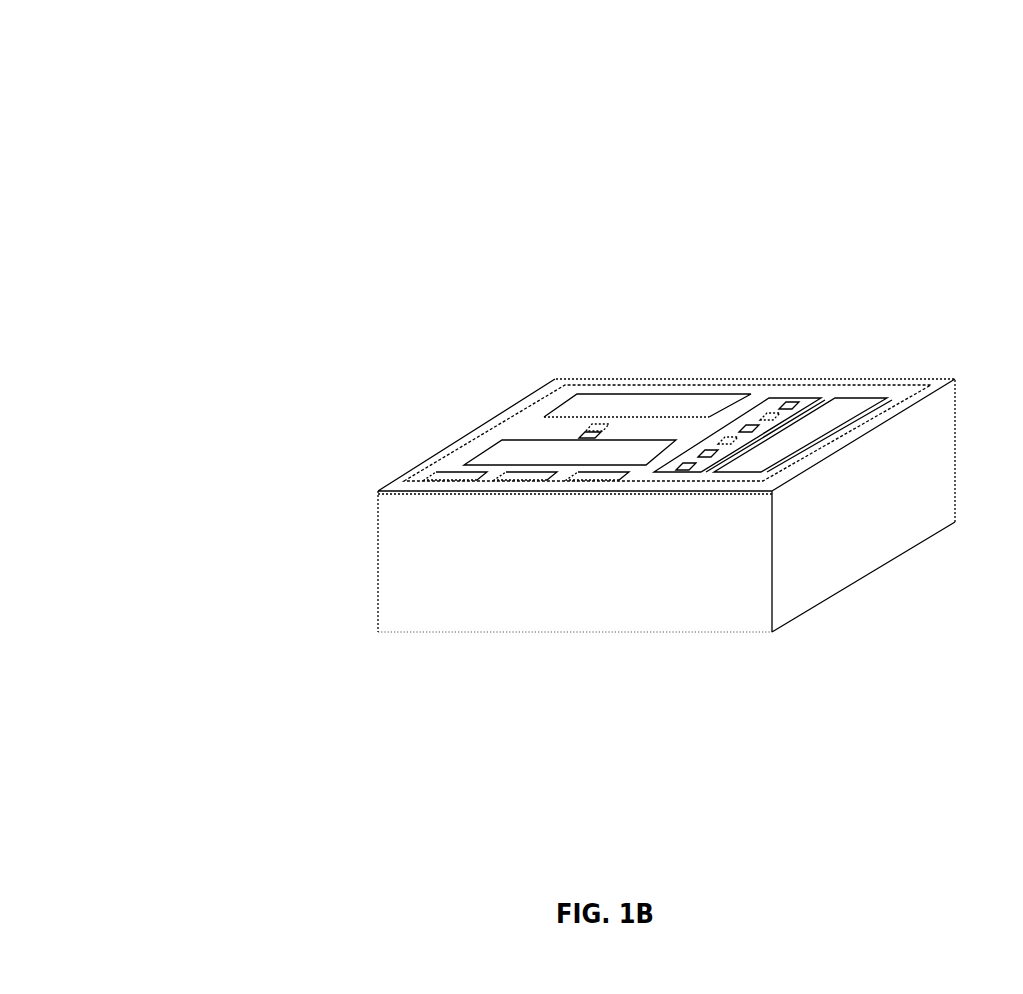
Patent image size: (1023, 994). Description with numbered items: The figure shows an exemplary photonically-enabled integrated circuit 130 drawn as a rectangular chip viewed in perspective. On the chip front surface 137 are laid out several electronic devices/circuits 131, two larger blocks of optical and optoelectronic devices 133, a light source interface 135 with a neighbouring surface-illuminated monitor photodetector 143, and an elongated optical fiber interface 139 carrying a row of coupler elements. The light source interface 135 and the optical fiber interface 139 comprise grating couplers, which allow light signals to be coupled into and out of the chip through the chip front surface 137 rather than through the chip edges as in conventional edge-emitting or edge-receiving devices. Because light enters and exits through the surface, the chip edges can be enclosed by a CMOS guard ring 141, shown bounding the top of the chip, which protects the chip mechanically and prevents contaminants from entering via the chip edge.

The photonically-enabled integrated circuit 130 is at (224, 103).
The electronic devices/circuits 131 is at (457, 480).
The optical and optoelectronic devices 133 is at (644, 413).
The light source interface 135 is at (602, 423).
The chip front surface 137 is at (705, 388).
The optical fiber interface 139 is at (796, 398).
The CMOS guard ring 141 is at (943, 382).
The surface-illuminated monitor photodetector 143 is at (582, 433).